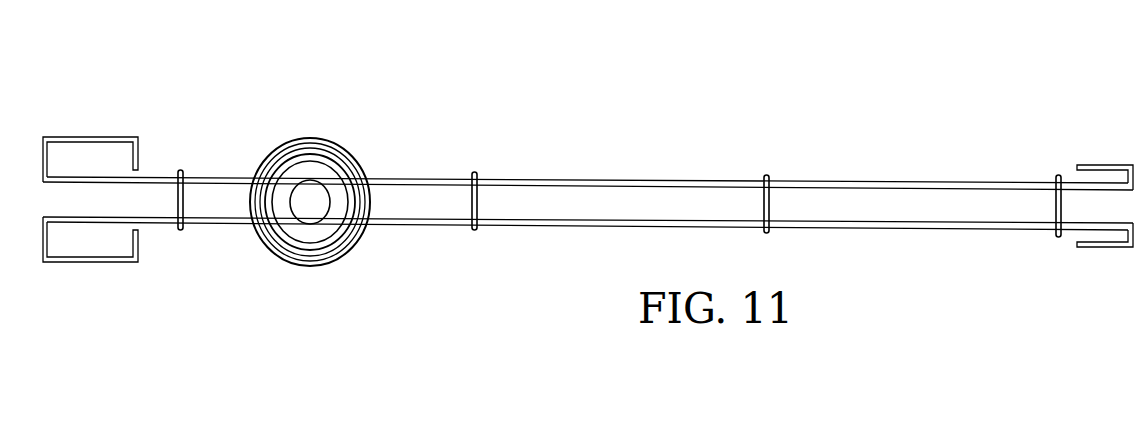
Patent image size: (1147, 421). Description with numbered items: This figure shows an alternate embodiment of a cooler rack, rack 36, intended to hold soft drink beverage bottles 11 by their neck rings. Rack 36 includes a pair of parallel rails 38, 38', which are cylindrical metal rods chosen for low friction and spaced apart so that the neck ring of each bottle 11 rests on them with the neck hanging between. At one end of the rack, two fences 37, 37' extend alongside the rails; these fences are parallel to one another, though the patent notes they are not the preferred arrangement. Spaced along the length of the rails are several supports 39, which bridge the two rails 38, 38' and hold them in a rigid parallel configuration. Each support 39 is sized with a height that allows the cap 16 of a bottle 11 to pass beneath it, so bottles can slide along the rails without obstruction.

The soft drink beverage bottle 11 is at (325, 117).
The cap 16 is at (299, 213).
The rack 36 is at (753, 122).
The fence 37 is at (105, 266).
The fence 37' is at (108, 132).
The rail 38 is at (588, 250).
The rail 38' is at (588, 163).
The support 39 is at (178, 200).